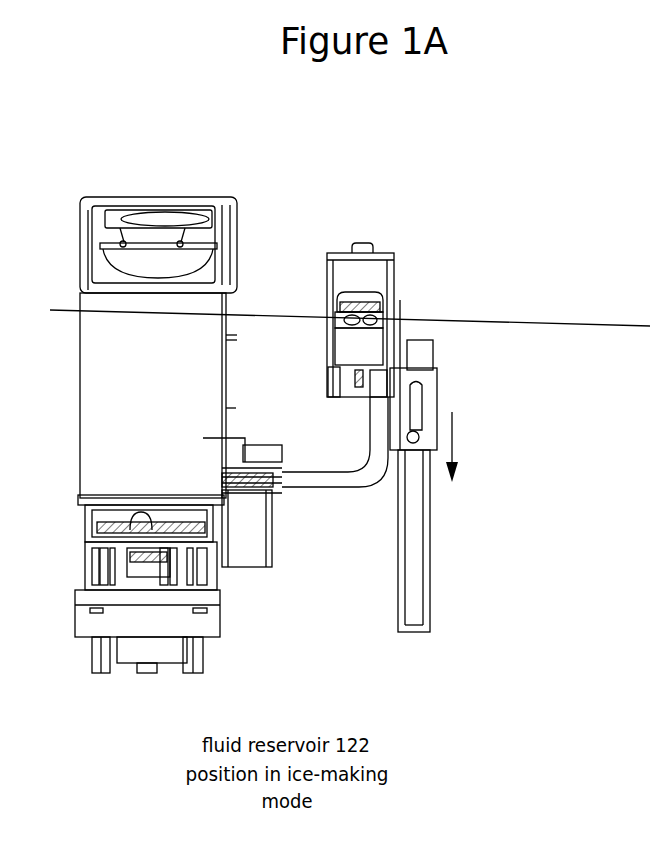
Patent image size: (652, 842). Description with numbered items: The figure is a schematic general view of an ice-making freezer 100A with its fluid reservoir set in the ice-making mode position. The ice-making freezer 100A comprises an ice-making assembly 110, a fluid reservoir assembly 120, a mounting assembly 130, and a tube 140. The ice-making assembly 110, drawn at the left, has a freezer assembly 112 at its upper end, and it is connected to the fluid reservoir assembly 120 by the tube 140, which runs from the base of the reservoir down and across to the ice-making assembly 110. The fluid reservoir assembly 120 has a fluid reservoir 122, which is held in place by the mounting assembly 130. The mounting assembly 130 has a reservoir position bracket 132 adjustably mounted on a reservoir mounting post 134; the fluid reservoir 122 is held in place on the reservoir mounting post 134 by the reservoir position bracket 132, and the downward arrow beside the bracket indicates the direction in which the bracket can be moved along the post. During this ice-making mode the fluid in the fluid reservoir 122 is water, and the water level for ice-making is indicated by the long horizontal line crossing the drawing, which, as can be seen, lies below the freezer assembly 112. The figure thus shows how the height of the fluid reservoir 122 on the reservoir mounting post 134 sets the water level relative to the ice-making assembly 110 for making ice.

The ice-making freezer 100A is at (539, 120).
The ice-making assembly 110 is at (235, 178).
The freezer assembly 112 is at (236, 232).
The fluid reservoir assembly 120 is at (447, 204).
The fluid reservoir 122 is at (394, 278).
The mounting assembly 130 is at (473, 625).
The reservoir position bracket 132 is at (435, 402).
The reservoir mounting post 134 is at (430, 558).
The tube 140 is at (305, 487).